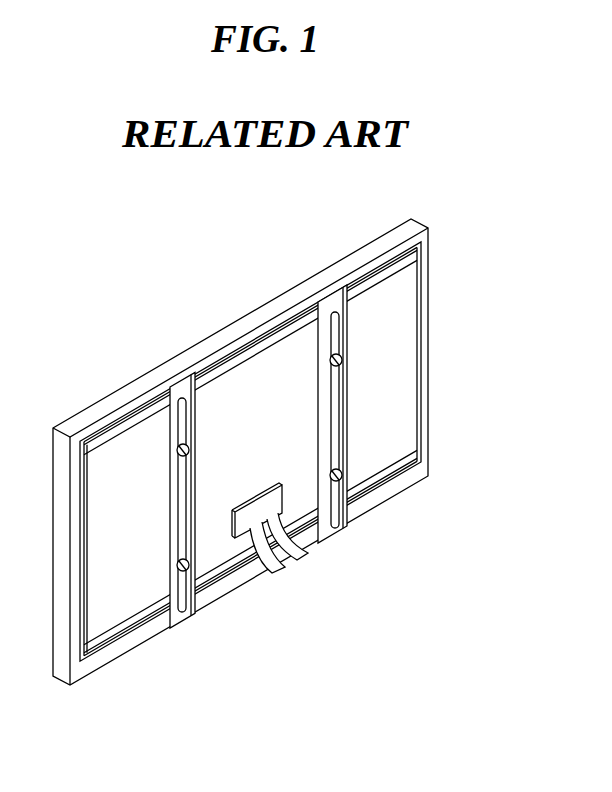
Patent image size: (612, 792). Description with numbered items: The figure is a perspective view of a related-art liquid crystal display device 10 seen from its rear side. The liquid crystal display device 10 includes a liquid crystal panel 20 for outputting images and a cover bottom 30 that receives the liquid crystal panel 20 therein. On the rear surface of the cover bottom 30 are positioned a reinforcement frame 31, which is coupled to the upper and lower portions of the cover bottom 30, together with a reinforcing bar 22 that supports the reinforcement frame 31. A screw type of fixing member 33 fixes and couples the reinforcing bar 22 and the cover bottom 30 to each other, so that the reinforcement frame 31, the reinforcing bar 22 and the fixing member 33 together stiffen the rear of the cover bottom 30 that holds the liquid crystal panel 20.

The liquid crystal display device 10 is at (71, 242).
The liquid crystal panel 20 is at (233, 330).
The reinforcing bar 22 is at (342, 507).
The cover bottom 30 is at (316, 487).
The reinforcement frame 31 is at (145, 632).
The fixing member 33 is at (348, 360).